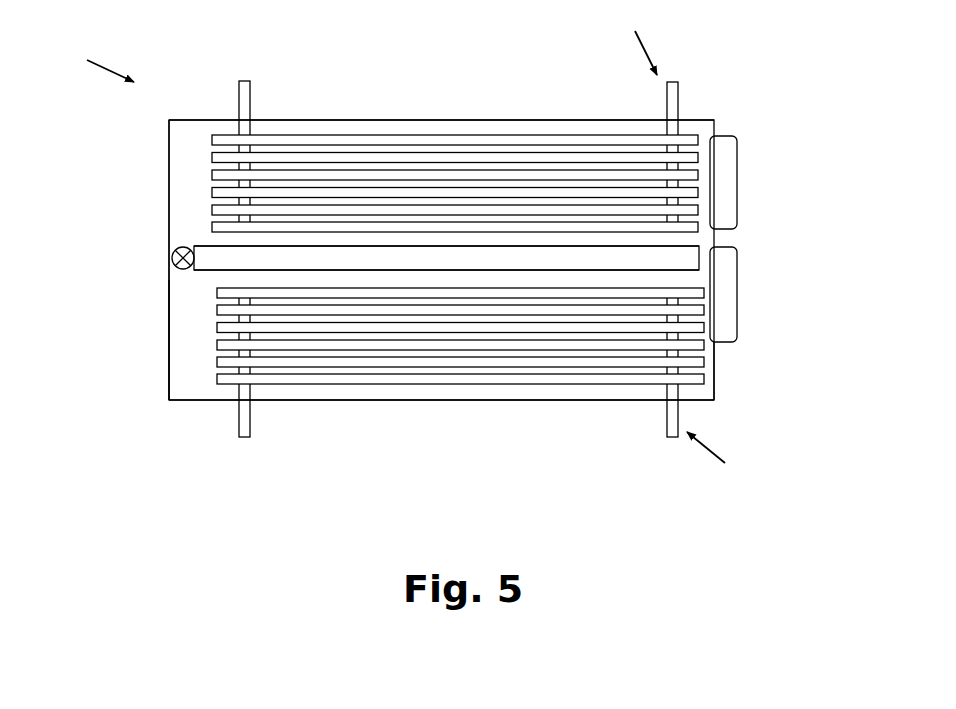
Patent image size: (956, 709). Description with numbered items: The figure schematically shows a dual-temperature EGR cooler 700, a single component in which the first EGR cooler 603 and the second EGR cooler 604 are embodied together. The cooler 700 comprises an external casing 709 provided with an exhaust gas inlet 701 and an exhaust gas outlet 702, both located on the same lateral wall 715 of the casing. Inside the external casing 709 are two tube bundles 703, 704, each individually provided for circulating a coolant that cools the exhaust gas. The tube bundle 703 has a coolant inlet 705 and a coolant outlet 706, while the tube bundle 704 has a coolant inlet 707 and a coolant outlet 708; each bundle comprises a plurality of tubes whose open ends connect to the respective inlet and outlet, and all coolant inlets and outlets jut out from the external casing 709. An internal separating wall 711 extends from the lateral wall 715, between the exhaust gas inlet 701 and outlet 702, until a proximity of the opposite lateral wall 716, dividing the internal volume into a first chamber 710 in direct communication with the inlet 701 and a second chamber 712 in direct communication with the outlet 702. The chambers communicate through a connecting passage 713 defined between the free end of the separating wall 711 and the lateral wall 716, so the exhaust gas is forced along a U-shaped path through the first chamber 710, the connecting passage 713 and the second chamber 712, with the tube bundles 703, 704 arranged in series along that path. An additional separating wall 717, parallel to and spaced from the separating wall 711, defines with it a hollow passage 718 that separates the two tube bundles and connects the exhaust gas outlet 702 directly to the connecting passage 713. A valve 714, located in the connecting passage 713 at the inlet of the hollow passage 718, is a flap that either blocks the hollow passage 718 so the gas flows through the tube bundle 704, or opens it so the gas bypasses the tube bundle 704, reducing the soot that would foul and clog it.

The dual-temperature EGR cooler 700 is at (89, 60).
The exhaust gas inlet 701 is at (737, 185).
The exhaust gas outlet 702 is at (737, 302).
The tube bundle 703 is at (453, 133).
The tube bundle 704 is at (460, 385).
The coolant inlet 705 is at (251, 103).
The coolant outlet 706 is at (667, 103).
The coolant inlet 707 is at (663, 412).
The coolant outlet 708 is at (250, 410).
The external casing 709 is at (712, 120).
The first chamber 710 is at (350, 126).
The separating wall 711 is at (698, 243).
The second chamber 712 is at (362, 393).
The connecting passage 713 is at (185, 335).
The valve 714 is at (173, 248).
The lateral wall 715 is at (715, 372).
The lateral wall 716 is at (170, 372).
The additional separating wall 717 is at (693, 270).
The hollow passage 718 is at (322, 258).
The first EGR cooler 603 is at (634, 41).
The second EGR cooler 604 is at (719, 458).